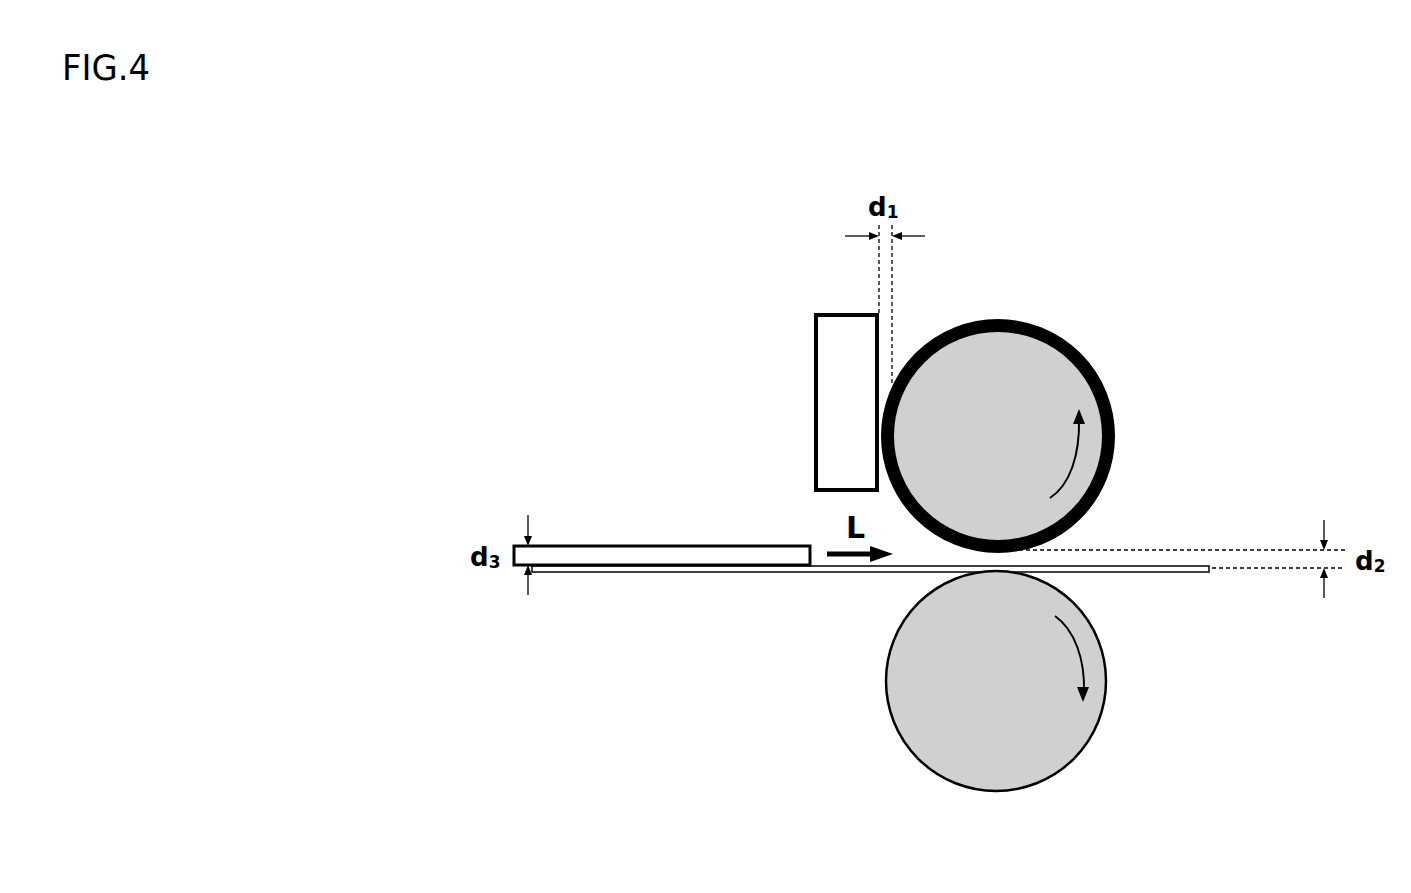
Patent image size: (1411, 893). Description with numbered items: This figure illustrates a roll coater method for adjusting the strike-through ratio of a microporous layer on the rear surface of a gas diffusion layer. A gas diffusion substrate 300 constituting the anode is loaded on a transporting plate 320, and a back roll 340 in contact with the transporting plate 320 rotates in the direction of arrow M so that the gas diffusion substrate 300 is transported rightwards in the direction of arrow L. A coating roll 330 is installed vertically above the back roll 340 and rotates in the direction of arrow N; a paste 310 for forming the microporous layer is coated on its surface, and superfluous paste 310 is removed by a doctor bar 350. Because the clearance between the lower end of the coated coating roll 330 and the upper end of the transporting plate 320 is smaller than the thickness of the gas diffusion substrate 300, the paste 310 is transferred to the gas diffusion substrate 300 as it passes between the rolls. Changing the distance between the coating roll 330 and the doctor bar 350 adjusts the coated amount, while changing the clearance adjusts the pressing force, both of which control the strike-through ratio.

The gas diffusion substrate 300 is at (632, 545).
The paste 310 is at (1030, 331).
The transporting plate 320 is at (706, 576).
The coating roll 330 is at (1050, 373).
The back roll 340 is at (1096, 734).
The doctor bar 350 is at (814, 366).